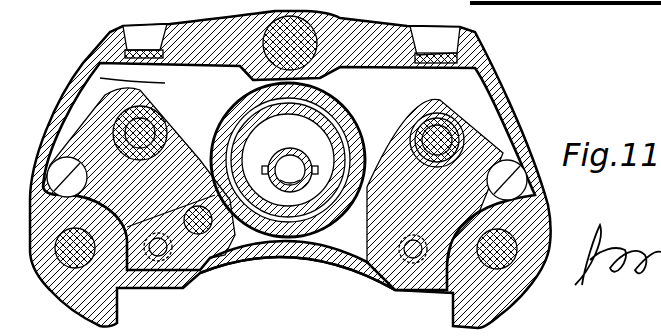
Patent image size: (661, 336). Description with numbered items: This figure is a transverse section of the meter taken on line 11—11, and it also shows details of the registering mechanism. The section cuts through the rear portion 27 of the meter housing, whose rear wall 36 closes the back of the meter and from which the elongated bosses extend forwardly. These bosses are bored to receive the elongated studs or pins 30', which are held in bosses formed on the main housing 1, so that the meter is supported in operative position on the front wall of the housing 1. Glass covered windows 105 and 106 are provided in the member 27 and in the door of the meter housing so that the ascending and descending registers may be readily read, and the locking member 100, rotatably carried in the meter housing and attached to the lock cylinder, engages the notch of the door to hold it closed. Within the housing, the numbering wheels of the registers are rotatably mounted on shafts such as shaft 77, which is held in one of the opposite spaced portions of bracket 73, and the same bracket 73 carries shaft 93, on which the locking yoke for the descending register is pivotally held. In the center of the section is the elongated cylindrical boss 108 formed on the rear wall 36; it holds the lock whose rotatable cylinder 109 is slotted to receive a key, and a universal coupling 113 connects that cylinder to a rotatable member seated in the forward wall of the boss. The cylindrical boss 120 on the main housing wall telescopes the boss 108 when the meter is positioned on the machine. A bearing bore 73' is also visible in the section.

The housing 1 is at (585, 8).
The rear portion 27 is at (341, 18).
The rear wall 36 is at (98, 74).
The glass covered window 106 is at (150, 48).
The glass covered window 105 is at (455, 15).
The locking member 100 is at (268, 28).
The section line 11 is at (476, 8).
The bearing bore 73' is at (338, 145).
The shaft 77 is at (445, 130).
The bracket 73 is at (285, 247).
The cylindrical boss 120 is at (242, 98).
The cylindrical boss 108 is at (228, 130).
The universal coupling 113 is at (322, 130).
The rotatable cylinder 109 is at (265, 157).
The shaft 93 is at (205, 268).
The studs or pins 30' is at (272, 244).